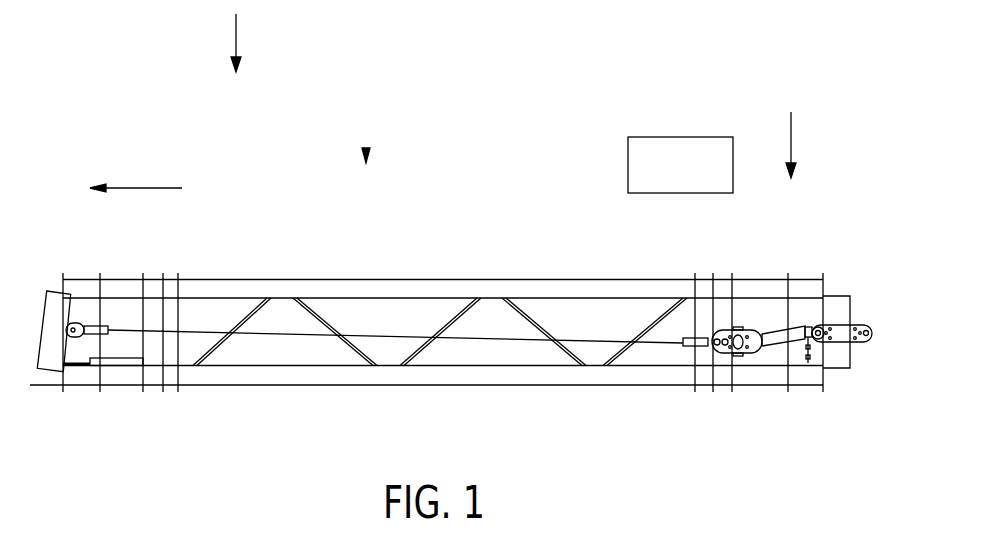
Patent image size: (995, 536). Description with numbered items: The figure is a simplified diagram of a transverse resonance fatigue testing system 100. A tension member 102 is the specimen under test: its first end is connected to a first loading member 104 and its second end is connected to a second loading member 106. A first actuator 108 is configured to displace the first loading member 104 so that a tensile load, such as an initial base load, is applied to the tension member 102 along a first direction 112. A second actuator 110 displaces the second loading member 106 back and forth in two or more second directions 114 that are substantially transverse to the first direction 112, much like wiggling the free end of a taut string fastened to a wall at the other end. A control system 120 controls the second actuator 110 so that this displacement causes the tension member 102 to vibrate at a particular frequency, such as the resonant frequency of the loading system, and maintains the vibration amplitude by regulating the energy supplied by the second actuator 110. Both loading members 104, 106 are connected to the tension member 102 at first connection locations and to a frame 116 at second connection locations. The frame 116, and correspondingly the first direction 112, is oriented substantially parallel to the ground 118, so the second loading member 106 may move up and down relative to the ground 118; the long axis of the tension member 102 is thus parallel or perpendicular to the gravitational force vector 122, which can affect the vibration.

The testing system 100 is at (366, 148).
The tension member 102 is at (382, 337).
The first loading member 104 is at (52, 292).
The second loading member 106 is at (768, 328).
The first actuator 108 is at (113, 365).
The second actuator 110 is at (810, 358).
The first direction 112 is at (148, 187).
The second directions 114 is at (791, 138).
The frame 116 is at (555, 279).
The ground 118 is at (50, 387).
The control system 120 is at (683, 137).
The gravitational force vector 122 is at (236, 33).